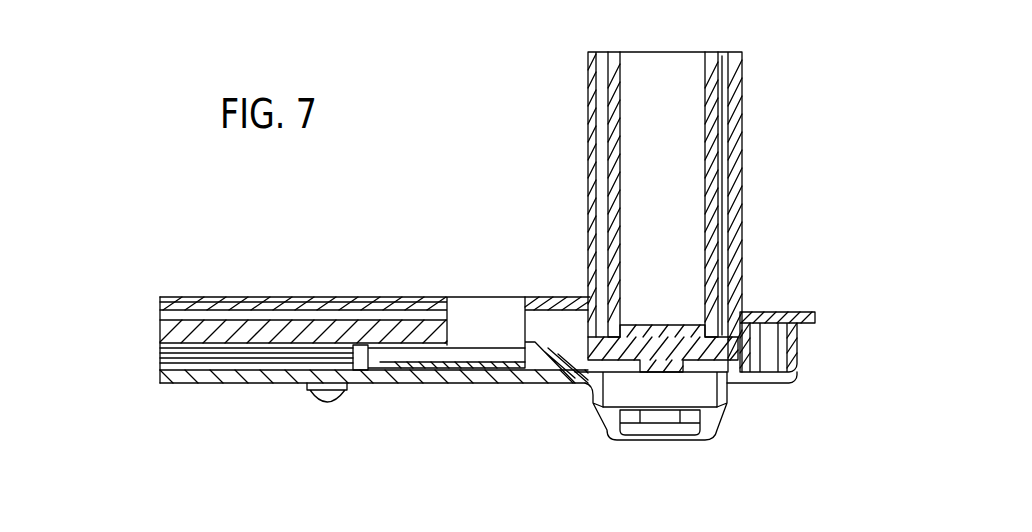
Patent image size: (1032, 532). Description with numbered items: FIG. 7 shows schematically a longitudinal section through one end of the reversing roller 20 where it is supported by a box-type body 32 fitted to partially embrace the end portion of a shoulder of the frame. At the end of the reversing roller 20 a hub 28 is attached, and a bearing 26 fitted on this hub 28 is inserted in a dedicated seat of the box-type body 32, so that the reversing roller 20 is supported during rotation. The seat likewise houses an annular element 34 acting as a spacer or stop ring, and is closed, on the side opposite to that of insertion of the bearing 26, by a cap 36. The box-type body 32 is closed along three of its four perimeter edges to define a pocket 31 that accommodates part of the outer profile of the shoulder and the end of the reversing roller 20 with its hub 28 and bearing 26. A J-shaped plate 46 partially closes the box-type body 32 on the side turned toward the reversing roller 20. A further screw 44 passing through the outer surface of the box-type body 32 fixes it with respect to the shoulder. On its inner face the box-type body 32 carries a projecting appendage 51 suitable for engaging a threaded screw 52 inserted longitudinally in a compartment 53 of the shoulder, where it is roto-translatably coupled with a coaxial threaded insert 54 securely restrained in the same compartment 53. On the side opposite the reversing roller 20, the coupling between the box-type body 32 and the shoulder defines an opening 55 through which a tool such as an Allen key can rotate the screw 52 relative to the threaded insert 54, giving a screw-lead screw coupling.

The reversing roller 20 is at (610, 180).
The pocket 31 is at (572, 330).
The hub 28 is at (660, 355).
The plate 46 is at (815, 313).
The bearing 26 is at (687, 387).
The cap 36 is at (648, 441).
The annular element 34 is at (670, 422).
The box-type body 32 is at (516, 394).
The threaded screw 52 is at (393, 369).
The threaded insert 54 is at (418, 345).
The projecting appendage 51 is at (548, 345).
The opening 55 is at (243, 367).
The compartment 53 is at (160, 370).
The screw 44 is at (330, 393).